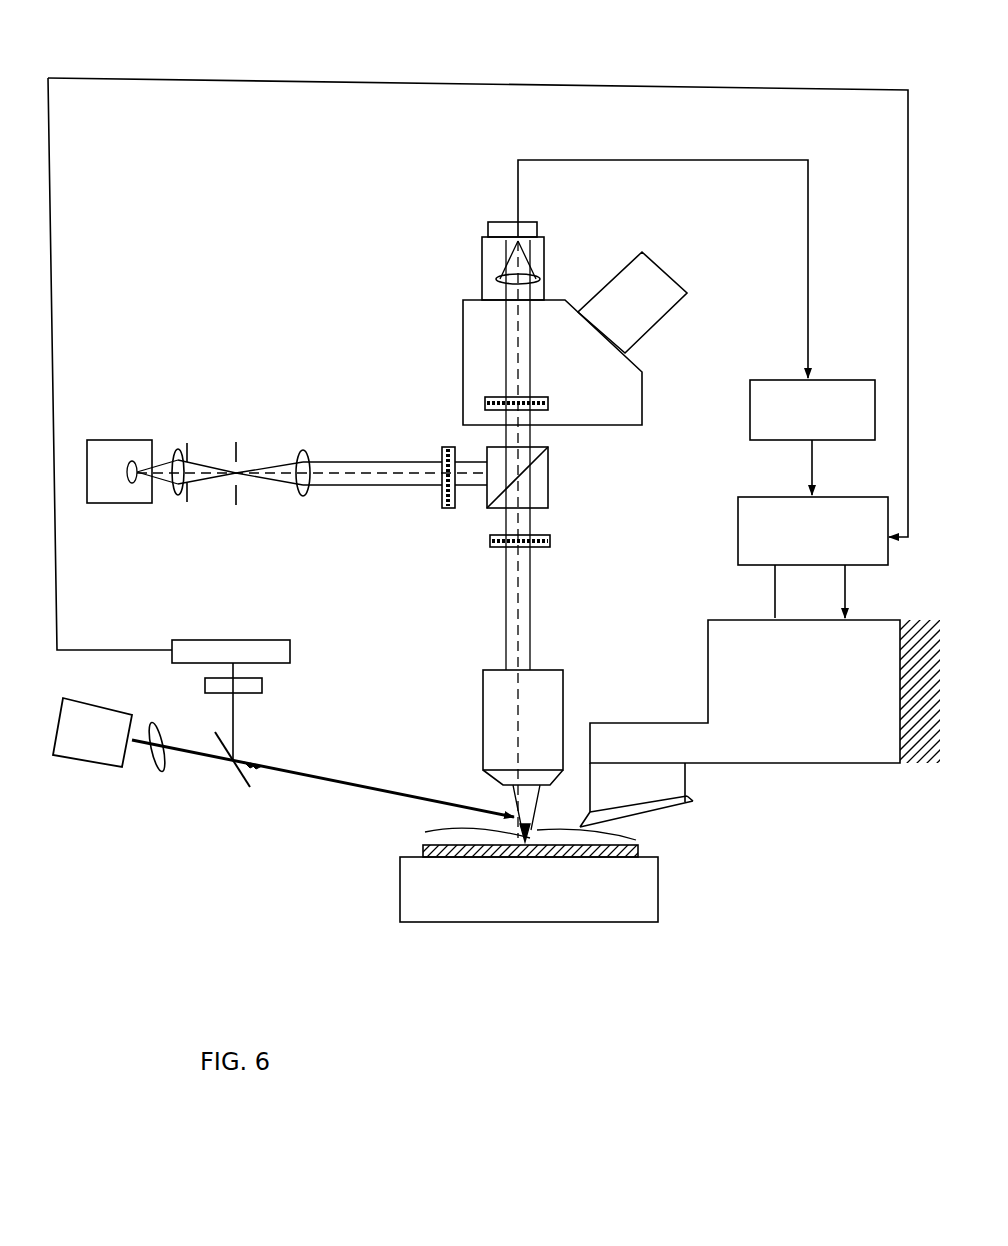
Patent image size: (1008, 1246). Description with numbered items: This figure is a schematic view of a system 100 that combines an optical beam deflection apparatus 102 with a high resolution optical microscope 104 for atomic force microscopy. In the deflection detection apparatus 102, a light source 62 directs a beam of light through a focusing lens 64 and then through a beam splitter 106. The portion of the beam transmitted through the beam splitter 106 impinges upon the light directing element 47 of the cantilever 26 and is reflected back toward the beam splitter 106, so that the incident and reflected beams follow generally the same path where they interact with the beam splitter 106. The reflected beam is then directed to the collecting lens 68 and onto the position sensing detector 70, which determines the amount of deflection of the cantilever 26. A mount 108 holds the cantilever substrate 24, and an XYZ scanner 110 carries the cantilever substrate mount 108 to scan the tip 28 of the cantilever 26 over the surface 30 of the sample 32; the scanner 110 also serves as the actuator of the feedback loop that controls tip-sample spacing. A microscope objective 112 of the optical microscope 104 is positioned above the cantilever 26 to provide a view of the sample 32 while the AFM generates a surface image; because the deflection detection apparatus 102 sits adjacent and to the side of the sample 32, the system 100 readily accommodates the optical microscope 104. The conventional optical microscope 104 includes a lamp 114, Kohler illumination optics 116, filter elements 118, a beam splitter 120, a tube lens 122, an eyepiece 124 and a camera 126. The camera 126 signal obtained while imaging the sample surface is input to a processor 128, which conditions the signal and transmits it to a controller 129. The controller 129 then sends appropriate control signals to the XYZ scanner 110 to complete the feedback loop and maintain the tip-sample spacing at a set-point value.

The system 100 is at (786, 70).
The optical beam deflection apparatus 102 is at (272, 735).
The optical microscope 104 is at (374, 357).
The beam splitter 106 is at (246, 787).
The mount 108 is at (686, 772).
The XYZ scanner 110 is at (806, 758).
The microscope objective 112 is at (550, 702).
The lamp 114 is at (108, 440).
The Kohler illumination optics 116 is at (256, 514).
The filter elements 118 is at (540, 397).
The beam splitter 120 is at (549, 484).
The tube lens 122 is at (530, 279).
The eyepiece 124 is at (645, 332).
The camera 126 is at (548, 230).
The processor 128 is at (843, 380).
The controller 129 is at (834, 497).
The cantilever substrate 24 is at (689, 801).
The cantilever 26 is at (546, 810).
The tip 28 is at (512, 832).
The surface 30 is at (636, 840).
The sample 32 is at (640, 854).
The light directing element 47 is at (494, 798).
The light source 62 is at (78, 762).
The focusing lens 64 is at (157, 772).
The collecting lens 68 is at (262, 686).
The position sensing detector 70 is at (275, 645).